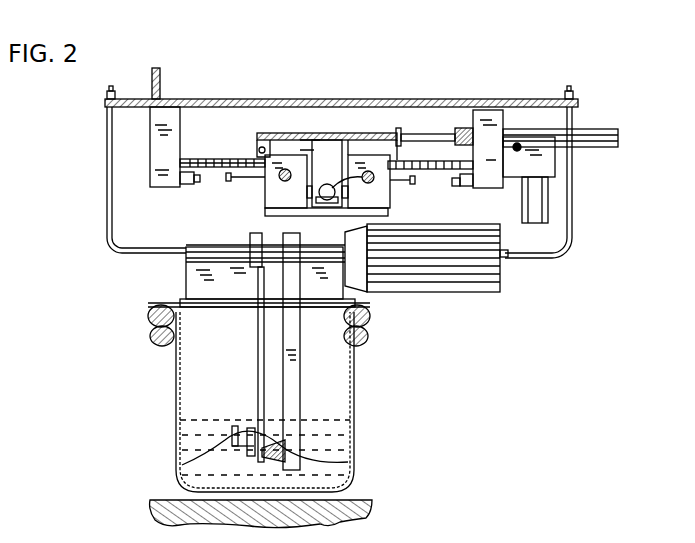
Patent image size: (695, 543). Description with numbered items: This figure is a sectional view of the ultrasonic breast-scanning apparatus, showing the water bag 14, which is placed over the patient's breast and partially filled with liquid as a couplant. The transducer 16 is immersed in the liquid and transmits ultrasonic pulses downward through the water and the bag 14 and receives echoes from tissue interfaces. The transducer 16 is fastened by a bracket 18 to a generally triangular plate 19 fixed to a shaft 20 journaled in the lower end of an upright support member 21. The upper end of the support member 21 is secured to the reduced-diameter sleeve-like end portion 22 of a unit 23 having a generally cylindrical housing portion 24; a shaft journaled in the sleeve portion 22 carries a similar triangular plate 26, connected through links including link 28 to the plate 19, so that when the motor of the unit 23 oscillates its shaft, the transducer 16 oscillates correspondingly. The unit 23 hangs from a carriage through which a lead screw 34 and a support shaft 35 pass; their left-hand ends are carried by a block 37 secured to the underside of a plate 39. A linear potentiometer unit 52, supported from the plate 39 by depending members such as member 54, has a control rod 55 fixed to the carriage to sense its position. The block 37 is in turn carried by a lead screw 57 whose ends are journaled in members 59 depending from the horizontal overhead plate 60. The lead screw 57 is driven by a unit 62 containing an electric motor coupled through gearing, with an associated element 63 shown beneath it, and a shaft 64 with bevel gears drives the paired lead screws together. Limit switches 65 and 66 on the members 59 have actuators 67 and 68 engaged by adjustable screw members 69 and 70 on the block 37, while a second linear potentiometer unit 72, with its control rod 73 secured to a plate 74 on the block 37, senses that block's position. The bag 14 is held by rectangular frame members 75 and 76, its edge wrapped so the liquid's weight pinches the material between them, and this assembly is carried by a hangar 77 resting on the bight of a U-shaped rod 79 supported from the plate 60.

The water bag 14 is at (354, 375).
The transducer 16 is at (232, 438).
The bracket 18 is at (250, 428).
The plate 19 is at (220, 455).
The shaft 20 is at (270, 450).
The upright support member 21 is at (300, 340).
The sleeve-like end portion 22 is at (338, 238).
The unit 23 is at (399, 294).
The cylindrical housing portion 24 is at (462, 286).
The plate 26 is at (250, 238).
The link 28 is at (258, 340).
The lead screw 34 is at (291, 178).
The support shaft 35 is at (374, 180).
The block 37 is at (268, 140).
The plate 39 is at (348, 140).
The linear potentiometer unit 52 is at (327, 184).
The depending support member 54 is at (310, 140).
The control rod 55 is at (352, 176).
The lead screw 57 is at (208, 160).
The member 59 is at (180, 128).
The horizontal overhead plate 60 is at (300, 99).
The unit 62 is at (556, 160).
The guide 63 is at (540, 193).
The shaft 64 is at (520, 145).
The limit switch 65 is at (187, 184).
The limit switch 66 is at (462, 186).
The actuator 67 is at (200, 182).
The actuator 68 is at (454, 186).
The member 69 is at (228, 182).
The member 70 is at (414, 184).
The linear potentiometer unit 72 is at (580, 134).
The rod 73 is at (430, 134).
The plate 74 is at (396, 130).
The frame member 75 is at (148, 316).
The frame member 76 is at (150, 336).
The hangar 77 is at (186, 272).
The U-shaped rod 79 is at (114, 252).